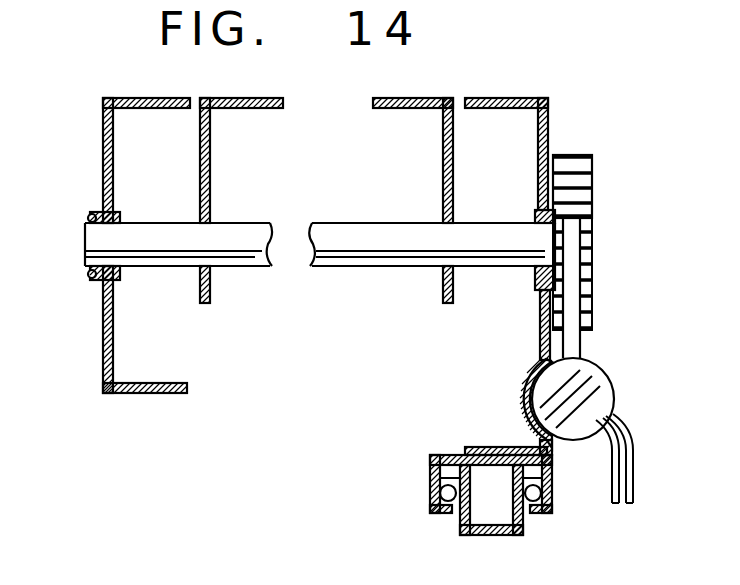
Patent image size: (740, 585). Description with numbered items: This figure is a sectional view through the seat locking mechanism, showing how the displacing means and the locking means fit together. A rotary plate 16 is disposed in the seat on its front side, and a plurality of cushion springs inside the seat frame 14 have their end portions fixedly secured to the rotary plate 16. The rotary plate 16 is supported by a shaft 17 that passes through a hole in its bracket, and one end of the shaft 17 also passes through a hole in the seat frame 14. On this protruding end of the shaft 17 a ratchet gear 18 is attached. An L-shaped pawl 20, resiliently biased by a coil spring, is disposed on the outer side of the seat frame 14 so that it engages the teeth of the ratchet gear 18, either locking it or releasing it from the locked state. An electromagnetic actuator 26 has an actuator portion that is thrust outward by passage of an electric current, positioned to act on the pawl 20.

The seat frame 14 is at (104, 142).
The rotary plate 16 is at (259, 98).
The shaft 17 is at (347, 224).
The ratchet gear 18 is at (585, 178).
The pawl 20 is at (576, 350).
The electromagnetic actuator 26 is at (615, 400).